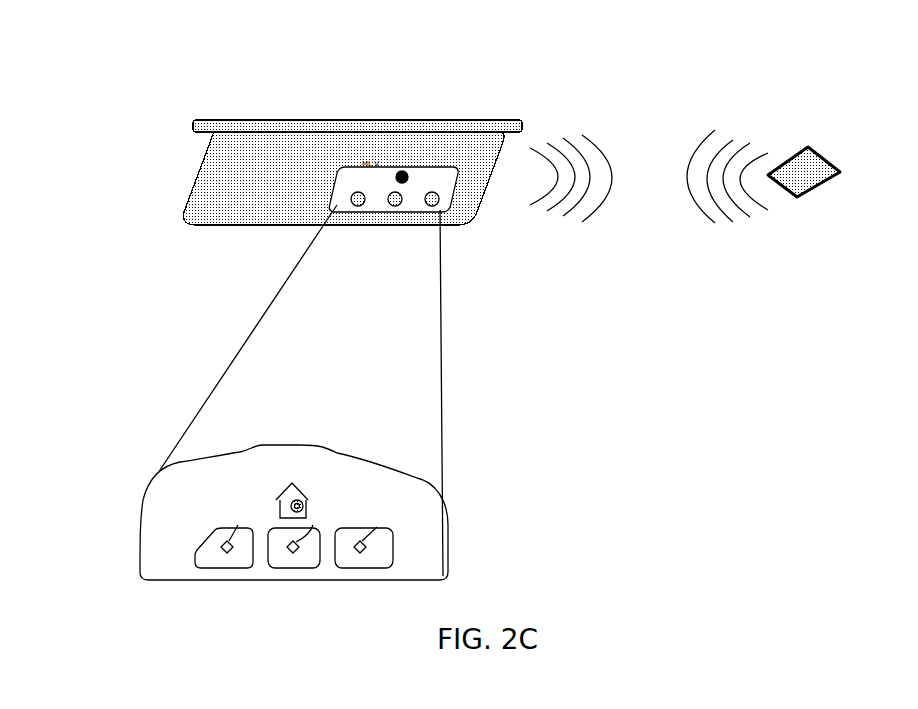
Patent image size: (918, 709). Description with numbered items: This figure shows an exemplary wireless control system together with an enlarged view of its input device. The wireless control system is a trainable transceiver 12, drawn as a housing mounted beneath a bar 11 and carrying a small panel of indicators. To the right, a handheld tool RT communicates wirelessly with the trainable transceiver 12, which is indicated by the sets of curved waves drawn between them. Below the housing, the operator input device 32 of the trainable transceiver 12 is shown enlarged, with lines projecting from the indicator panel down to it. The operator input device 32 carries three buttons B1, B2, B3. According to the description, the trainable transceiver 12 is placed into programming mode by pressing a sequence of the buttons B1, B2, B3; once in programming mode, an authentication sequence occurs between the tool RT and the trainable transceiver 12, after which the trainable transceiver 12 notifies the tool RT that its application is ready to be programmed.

The ceiling mounting bar 11 is at (388, 110).
The trainable transceiver 12 is at (188, 190).
The operator input device 32 is at (352, 512).
The tool RT is at (790, 118).
The button B1 is at (224, 535).
The button B2 is at (301, 535).
The button B3 is at (364, 535).